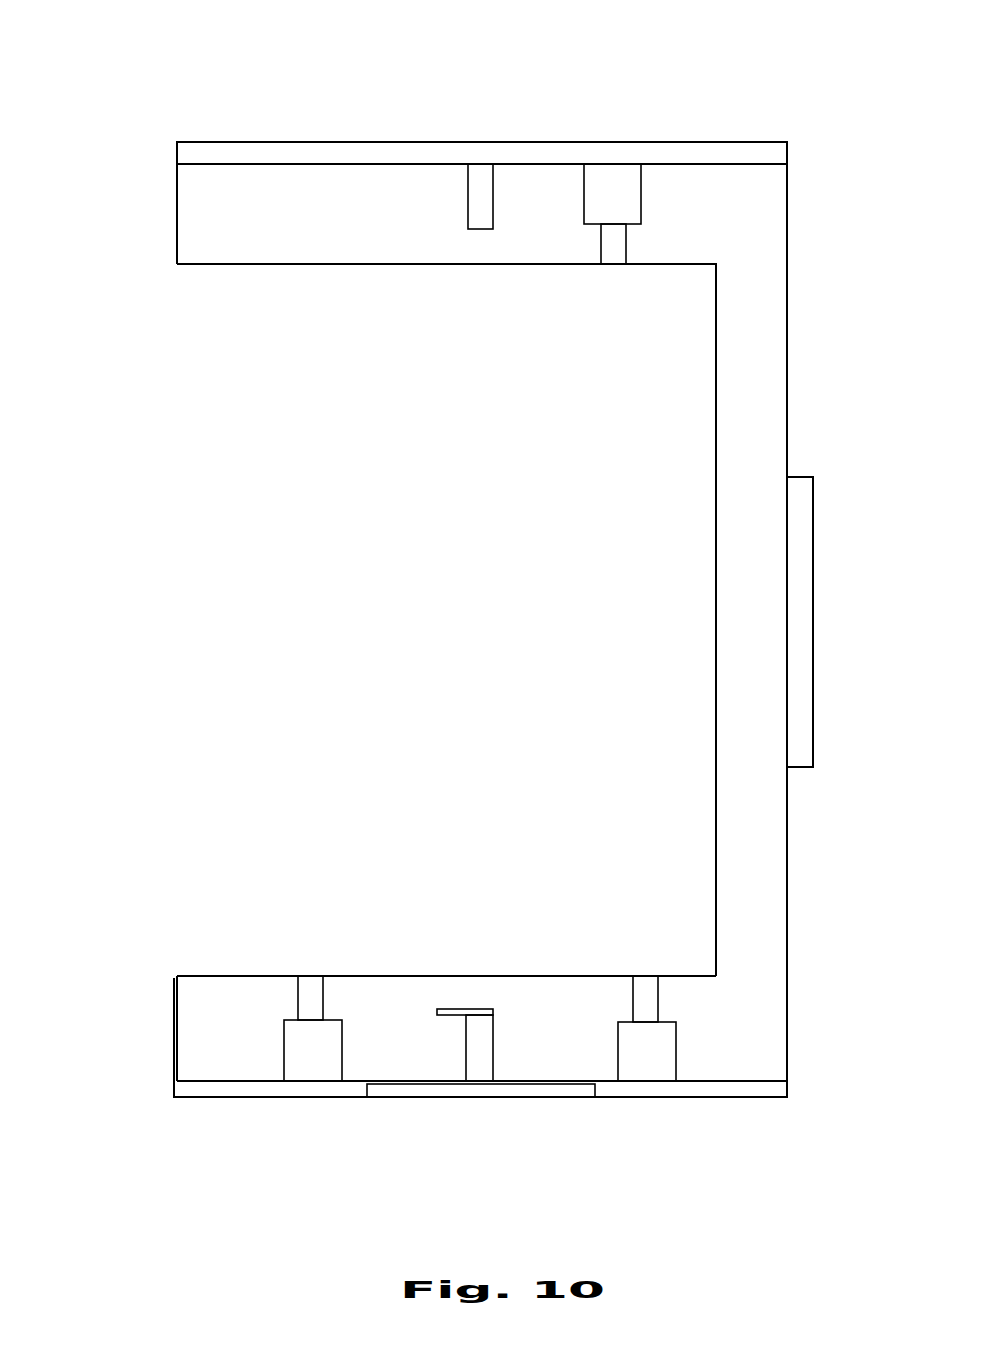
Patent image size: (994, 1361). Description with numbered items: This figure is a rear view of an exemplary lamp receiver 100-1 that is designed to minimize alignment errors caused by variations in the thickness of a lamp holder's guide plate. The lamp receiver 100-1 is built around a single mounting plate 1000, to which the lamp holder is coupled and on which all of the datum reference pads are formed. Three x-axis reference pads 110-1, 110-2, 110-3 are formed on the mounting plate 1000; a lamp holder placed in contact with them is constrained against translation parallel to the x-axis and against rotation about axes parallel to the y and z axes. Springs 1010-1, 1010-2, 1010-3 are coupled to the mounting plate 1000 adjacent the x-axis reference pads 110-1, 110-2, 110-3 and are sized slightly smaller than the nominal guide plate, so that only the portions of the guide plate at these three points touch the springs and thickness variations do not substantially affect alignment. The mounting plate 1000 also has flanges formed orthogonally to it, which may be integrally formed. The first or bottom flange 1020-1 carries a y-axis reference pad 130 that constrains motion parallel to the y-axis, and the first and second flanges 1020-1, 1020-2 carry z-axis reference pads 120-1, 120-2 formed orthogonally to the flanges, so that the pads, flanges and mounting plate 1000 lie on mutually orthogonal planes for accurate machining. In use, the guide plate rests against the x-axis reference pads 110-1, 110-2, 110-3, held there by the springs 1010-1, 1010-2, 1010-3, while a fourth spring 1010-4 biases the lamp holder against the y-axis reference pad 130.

The lamp receiver 100-1 is at (270, 93).
The mounting plate 1000 is at (280, 224).
The spring 1010-1 is at (645, 1092).
The spring 1010-2 is at (312, 1092).
The spring 1010-3 is at (613, 153).
The fourth spring 1010-4 is at (463, 1008).
The x-axis reference pad 110-1 is at (645, 975).
The x-axis reference pad 110-2 is at (311, 975).
The x-axis reference pad 110-3 is at (613, 265).
The z-axis reference pad 120-1 is at (454, 1046).
The z-axis reference pad 120-2 is at (457, 198).
The first or bottom flange 1020-1 is at (255, 1069).
The second flange 1020-2 is at (329, 175).
The y-axis reference pad 130 is at (201, 1070).